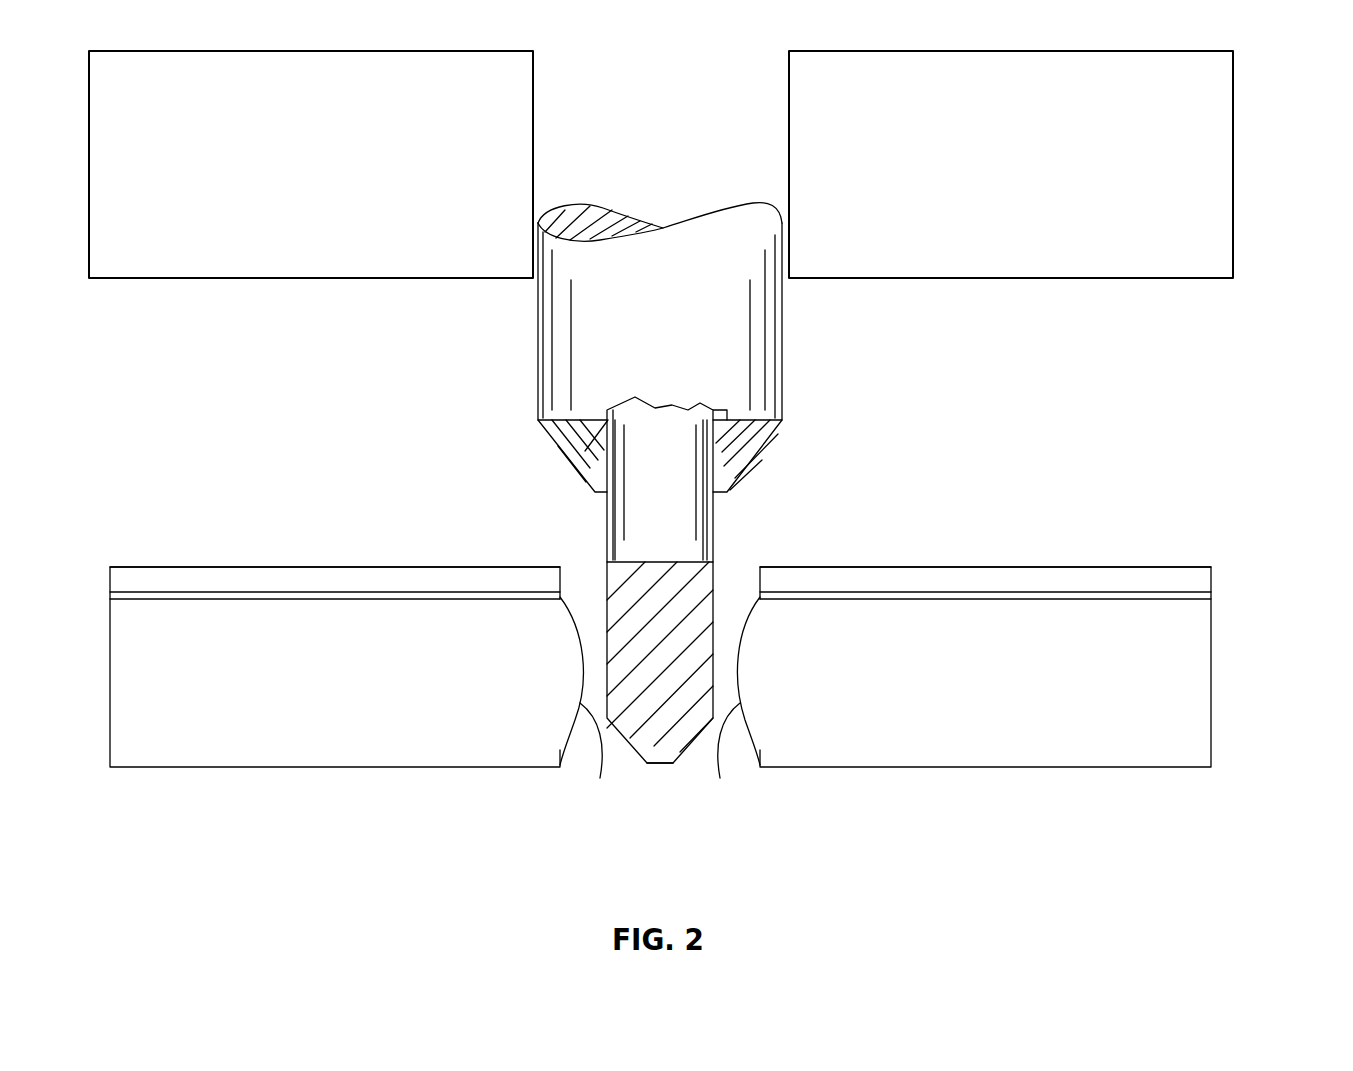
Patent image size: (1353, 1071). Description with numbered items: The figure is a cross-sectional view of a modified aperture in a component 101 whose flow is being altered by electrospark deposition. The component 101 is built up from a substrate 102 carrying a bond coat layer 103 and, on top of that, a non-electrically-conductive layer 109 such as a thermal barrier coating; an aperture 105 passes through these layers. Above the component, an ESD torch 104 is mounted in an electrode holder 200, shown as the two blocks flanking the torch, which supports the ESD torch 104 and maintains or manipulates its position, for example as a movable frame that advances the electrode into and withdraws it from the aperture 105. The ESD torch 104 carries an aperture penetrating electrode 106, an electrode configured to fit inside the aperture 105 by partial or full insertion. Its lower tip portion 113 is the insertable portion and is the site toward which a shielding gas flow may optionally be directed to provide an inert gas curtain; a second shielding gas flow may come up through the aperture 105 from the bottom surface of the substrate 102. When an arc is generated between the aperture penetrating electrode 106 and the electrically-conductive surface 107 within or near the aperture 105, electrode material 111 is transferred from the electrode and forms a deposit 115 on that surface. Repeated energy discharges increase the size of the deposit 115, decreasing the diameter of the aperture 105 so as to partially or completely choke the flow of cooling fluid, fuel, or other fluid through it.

The electrode holder 200 is at (274, 171).
The ESD torch 104 is at (783, 320).
The component 101 is at (1070, 445).
The aperture penetrating electrode 106 is at (607, 537).
The aperture 105 is at (733, 573).
The non-electrically-conductive layer 109 is at (1203, 582).
The bond coat layer 103 is at (1203, 594).
The substrate 102 is at (1203, 714).
The electrically-conductive surface 107 is at (572, 748).
The deposit 115 is at (600, 778).
The tip portion 113 is at (668, 713).
The electrode material 111 is at (673, 765).